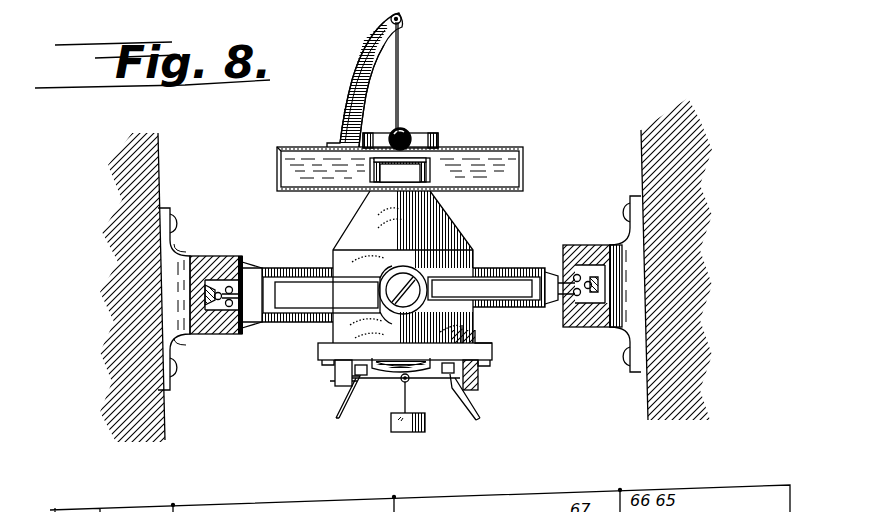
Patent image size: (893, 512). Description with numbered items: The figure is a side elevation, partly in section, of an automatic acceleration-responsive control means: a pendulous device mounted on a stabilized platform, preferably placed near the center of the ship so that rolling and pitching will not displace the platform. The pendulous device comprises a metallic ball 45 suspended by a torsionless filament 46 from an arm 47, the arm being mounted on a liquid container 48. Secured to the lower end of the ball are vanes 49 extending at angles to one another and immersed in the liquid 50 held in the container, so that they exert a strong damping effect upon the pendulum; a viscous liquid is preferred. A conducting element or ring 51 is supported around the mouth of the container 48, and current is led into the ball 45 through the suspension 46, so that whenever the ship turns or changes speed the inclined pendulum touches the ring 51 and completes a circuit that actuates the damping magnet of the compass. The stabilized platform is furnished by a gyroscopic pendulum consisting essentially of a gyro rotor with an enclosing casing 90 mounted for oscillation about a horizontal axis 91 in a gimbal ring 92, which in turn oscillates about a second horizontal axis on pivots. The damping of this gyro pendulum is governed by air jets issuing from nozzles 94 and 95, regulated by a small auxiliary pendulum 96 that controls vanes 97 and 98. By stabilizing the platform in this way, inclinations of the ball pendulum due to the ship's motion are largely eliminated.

The metallic ball 45 is at (404, 129).
The torsionless filament 46 is at (402, 57).
The arm 47 is at (350, 60).
The liquid container 48 is at (280, 150).
The vanes 49 is at (428, 180).
The liquid 50 is at (524, 168).
The conducting ring 51 is at (428, 138).
The gyro rotor casing 90 is at (403, 267).
The horizontal axis 91 is at (389, 296).
The gimbal ring 92 is at (302, 275).
The nozzle 94 is at (480, 397).
The nozzle 95 is at (336, 401).
The auxiliary pendulum 96 is at (406, 415).
The vane 97 is at (470, 401).
The vane 98 is at (346, 406).